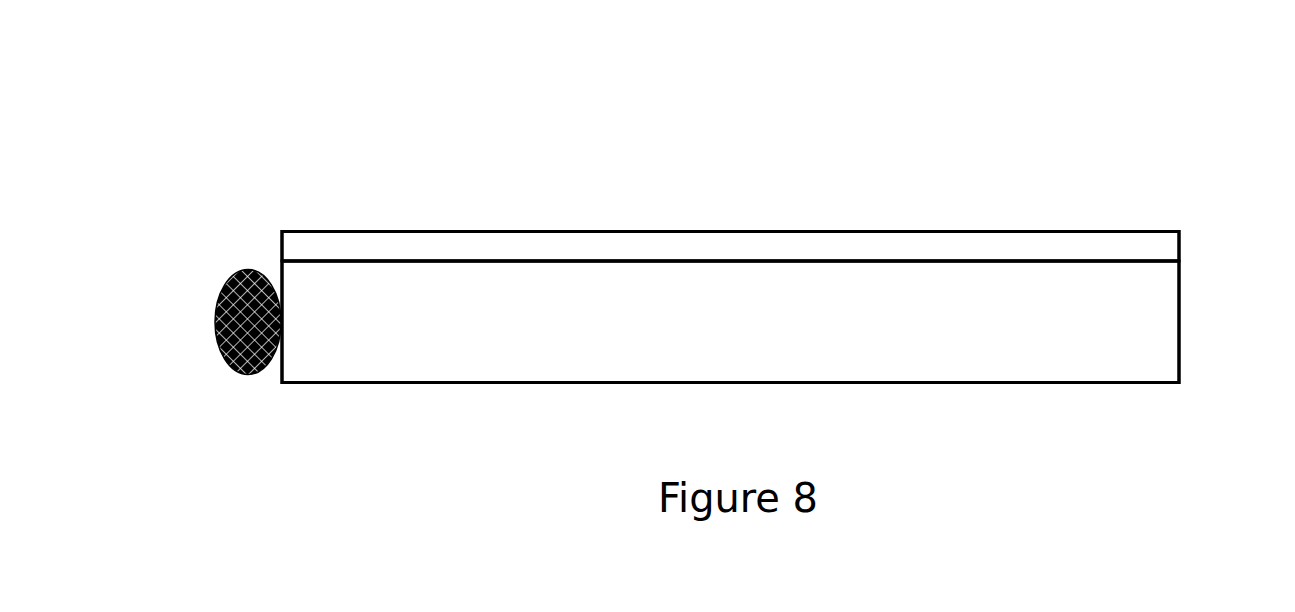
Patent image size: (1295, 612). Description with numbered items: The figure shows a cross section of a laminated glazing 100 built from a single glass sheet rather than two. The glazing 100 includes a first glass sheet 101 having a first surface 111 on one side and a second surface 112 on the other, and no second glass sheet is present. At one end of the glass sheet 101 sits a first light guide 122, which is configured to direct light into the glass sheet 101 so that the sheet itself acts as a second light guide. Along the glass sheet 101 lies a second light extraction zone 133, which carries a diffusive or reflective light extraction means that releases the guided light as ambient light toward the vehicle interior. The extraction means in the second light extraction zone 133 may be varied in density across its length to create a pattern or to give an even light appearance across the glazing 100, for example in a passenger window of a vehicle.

The glazing 100 is at (612, 155).
The first glass sheet 101 is at (1150, 322).
The second light extraction zone 133 is at (298, 250).
The second surface 112 is at (770, 262).
The first surface 111 is at (770, 382).
The first light guide 122 is at (222, 342).